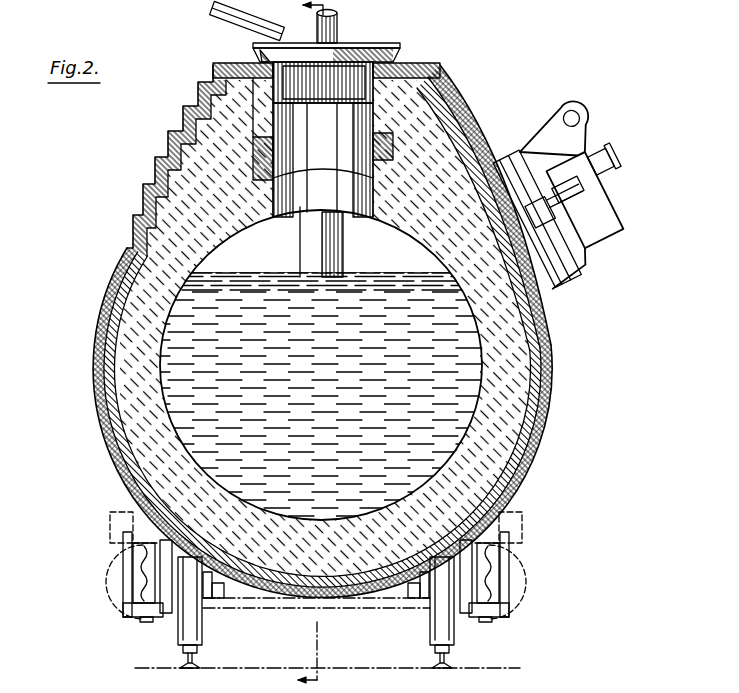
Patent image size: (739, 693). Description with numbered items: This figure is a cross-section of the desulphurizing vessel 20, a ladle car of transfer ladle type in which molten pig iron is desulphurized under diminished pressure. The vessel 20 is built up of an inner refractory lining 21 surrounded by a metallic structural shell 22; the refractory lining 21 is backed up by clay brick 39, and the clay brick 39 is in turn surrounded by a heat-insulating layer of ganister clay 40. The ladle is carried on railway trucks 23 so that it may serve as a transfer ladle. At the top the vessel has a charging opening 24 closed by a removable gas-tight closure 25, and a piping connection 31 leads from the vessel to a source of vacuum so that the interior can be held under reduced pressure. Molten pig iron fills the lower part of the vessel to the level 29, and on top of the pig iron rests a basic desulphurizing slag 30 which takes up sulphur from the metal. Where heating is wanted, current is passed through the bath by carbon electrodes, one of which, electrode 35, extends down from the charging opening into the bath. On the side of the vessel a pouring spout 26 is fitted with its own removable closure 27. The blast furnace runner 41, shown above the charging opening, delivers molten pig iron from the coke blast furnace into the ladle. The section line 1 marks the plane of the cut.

The section line 1- 1 is at (301, 346).
The desulphurizing vessel 20 is at (168, 210).
The refractory lining 21 is at (308, 540).
The metallic structural shell 22 is at (551, 386).
The railway trucks 23 is at (132, 558).
The charging opening 24 is at (323, 169).
The removable gas-tight closure 25 is at (382, 46).
The pouring spout 26 is at (510, 188).
The removable closure 27 is at (600, 218).
The level of molten pig iron 29 is at (283, 292).
The basic desulphurizing slag 30 is at (378, 279).
The piping connection 31 is at (338, 21).
The electrode 35 is at (344, 243).
The clay brick 39 is at (479, 148).
The ganister clay 40 is at (466, 122).
The blast furnace runner 41 is at (234, 27).